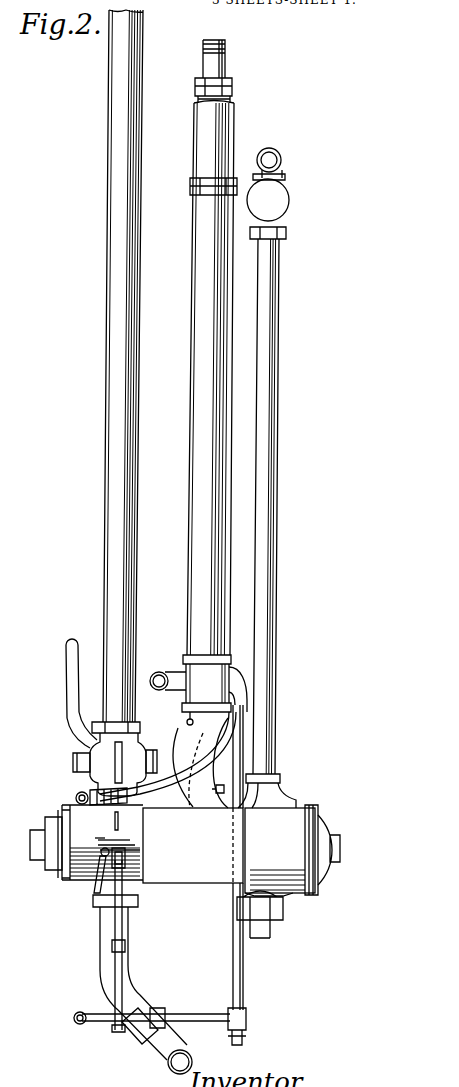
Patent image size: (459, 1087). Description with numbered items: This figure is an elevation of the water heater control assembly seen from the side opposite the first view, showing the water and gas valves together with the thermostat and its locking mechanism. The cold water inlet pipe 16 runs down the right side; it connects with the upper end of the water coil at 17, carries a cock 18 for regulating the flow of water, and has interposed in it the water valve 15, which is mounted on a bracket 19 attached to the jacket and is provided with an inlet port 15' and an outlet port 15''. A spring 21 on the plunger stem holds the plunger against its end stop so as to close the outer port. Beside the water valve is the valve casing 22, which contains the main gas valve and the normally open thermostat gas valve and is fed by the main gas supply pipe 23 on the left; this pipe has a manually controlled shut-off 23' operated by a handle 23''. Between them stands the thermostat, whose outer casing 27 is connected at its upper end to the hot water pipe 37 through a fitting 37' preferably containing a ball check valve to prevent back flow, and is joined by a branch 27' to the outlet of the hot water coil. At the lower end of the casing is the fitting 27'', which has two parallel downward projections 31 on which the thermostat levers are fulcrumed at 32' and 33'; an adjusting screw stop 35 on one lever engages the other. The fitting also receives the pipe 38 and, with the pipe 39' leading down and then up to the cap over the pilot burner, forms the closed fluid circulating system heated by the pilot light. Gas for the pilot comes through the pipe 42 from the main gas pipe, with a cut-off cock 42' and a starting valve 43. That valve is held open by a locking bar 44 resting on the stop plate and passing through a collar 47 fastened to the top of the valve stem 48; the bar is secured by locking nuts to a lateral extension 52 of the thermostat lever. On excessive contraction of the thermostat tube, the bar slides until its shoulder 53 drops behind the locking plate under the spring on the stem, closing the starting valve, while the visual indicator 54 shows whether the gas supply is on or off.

The water valve 15 is at (294, 850).
The inlet port 15' is at (286, 908).
The outlet port 15'' is at (281, 791).
The cold water inlet pipe 16 is at (277, 530).
The connection of inlet pipe to coil 17 is at (280, 165).
The cock 18 is at (288, 210).
The bracket 19 is at (212, 877).
The spring 21 is at (330, 856).
The valve casing 22 is at (54, 854).
The main gas supply pipe 23 is at (102, 366).
The manually controlled shut-off 23' is at (98, 759).
The handle 23'' is at (65, 693).
The thermostat casing 27 is at (194, 636).
The branch 27' is at (196, 695).
The fitting 27'' is at (168, 665).
The downward projections 31 is at (181, 742).
The fulcrum of lever 32 32' is at (178, 722).
The fulcrum of lever 33 33' is at (193, 845).
The adjusting screw stop 35 is at (226, 790).
The hot water pipe 37 is at (234, 59).
The fitting 37' is at (233, 366).
The pipe 38 is at (240, 726).
The pipe 39' is at (176, 875).
The pipe 42 is at (104, 887).
The cut-off cock 42' is at (96, 959).
The starting valve 43 is at (126, 860).
The locking bar 44 is at (118, 845).
The collar 47 is at (112, 846).
The valve stem 48 is at (120, 850).
The lateral extension 52 is at (89, 840).
The shoulder 53 is at (118, 838).
The visual indicator 54 is at (114, 813).